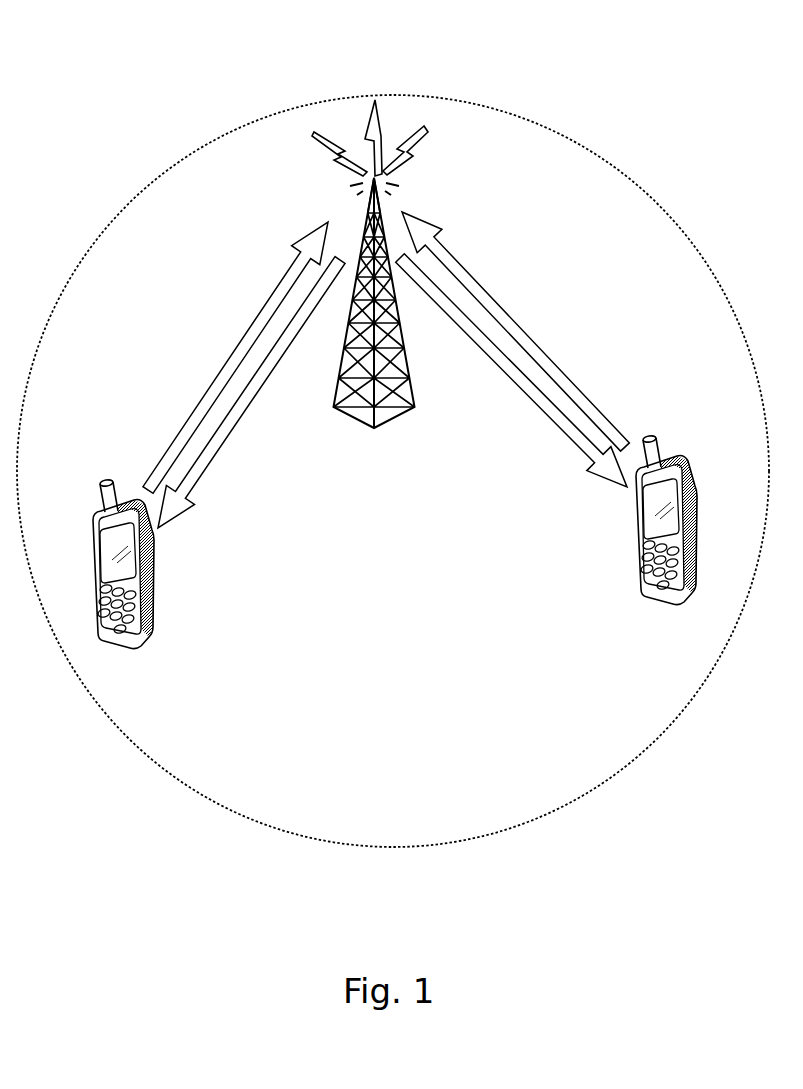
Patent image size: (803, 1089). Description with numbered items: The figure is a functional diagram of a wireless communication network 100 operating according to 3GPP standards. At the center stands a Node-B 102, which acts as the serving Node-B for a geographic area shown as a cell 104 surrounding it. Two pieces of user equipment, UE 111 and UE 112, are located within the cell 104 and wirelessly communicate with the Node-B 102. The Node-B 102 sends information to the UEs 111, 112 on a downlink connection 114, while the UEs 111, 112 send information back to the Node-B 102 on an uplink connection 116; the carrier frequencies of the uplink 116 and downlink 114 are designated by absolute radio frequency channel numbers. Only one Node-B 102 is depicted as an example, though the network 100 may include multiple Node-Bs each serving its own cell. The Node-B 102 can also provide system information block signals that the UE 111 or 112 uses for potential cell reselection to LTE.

The wireless communication network 100 is at (578, 72).
The Node-B 102 is at (368, 217).
The cell 104 is at (673, 720).
The user equipment 111 is at (92, 532).
The user equipment 112 is at (678, 468).
The downlink connection 114 is at (280, 358).
The uplink connection 116 is at (232, 350).